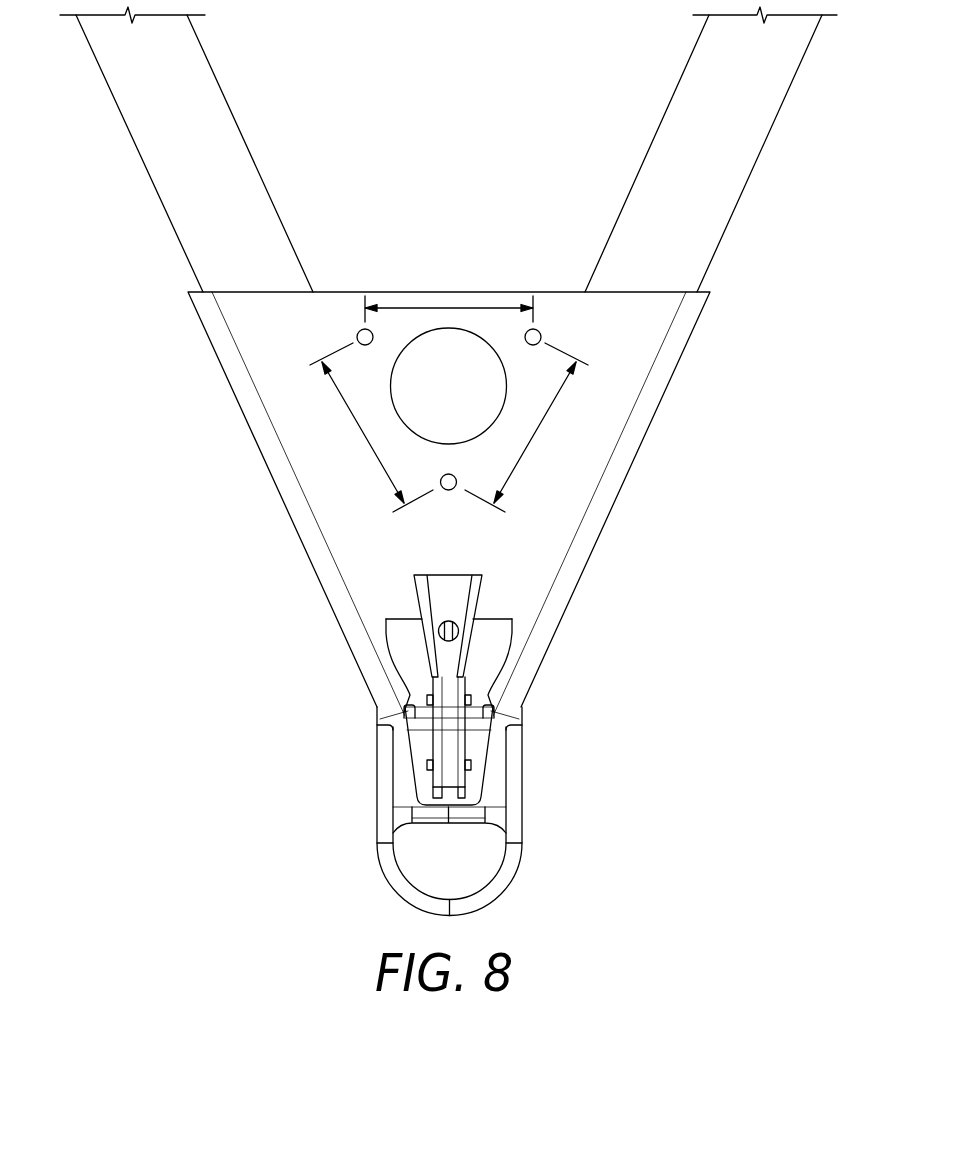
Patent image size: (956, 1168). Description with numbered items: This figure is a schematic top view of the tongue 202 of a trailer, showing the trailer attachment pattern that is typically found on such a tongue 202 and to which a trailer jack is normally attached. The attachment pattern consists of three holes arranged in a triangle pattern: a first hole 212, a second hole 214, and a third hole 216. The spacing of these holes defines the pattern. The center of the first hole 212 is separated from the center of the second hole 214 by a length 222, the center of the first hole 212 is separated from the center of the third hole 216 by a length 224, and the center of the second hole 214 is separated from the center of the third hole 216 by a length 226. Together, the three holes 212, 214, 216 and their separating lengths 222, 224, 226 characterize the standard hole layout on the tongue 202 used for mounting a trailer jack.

The tongue 202 is at (301, 569).
The first hole 212 is at (447, 490).
The second hole 214 is at (539, 331).
The third hole 216 is at (359, 331).
The length 222 is at (536, 432).
The length 224 is at (362, 432).
The length 226 is at (452, 307).